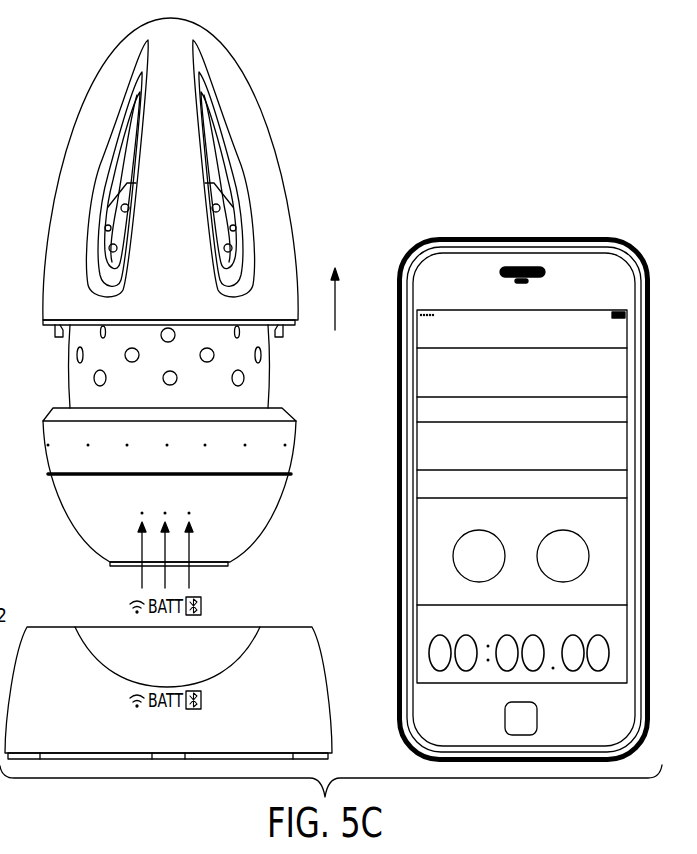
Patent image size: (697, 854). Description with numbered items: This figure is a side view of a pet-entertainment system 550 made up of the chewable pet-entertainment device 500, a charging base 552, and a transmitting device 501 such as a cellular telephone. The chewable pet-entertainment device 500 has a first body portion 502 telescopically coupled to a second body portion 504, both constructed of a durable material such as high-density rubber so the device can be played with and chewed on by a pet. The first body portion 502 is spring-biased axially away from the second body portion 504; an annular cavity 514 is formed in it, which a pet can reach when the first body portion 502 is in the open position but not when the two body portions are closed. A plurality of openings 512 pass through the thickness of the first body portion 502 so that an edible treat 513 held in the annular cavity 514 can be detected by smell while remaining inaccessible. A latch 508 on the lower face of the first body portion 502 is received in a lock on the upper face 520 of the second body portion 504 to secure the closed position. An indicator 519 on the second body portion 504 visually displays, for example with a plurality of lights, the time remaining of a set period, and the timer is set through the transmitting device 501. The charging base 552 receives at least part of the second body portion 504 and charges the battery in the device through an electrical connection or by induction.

The chewable pet-entertainment device 500 is at (280, 160).
The transmitting device 501 is at (510, 237).
The first body portion 502 is at (276, 257).
The second body portion 504 is at (262, 503).
The latch 508 is at (55, 335).
The openings 512 is at (205, 133).
The edible treat 513 is at (78, 382).
The annular cavity 514 is at (268, 387).
The indicator 519 is at (52, 452).
The upper face 520 is at (290, 422).
The pet-entertainment system 550 is at (423, 185).
The charging base 552 is at (312, 690).